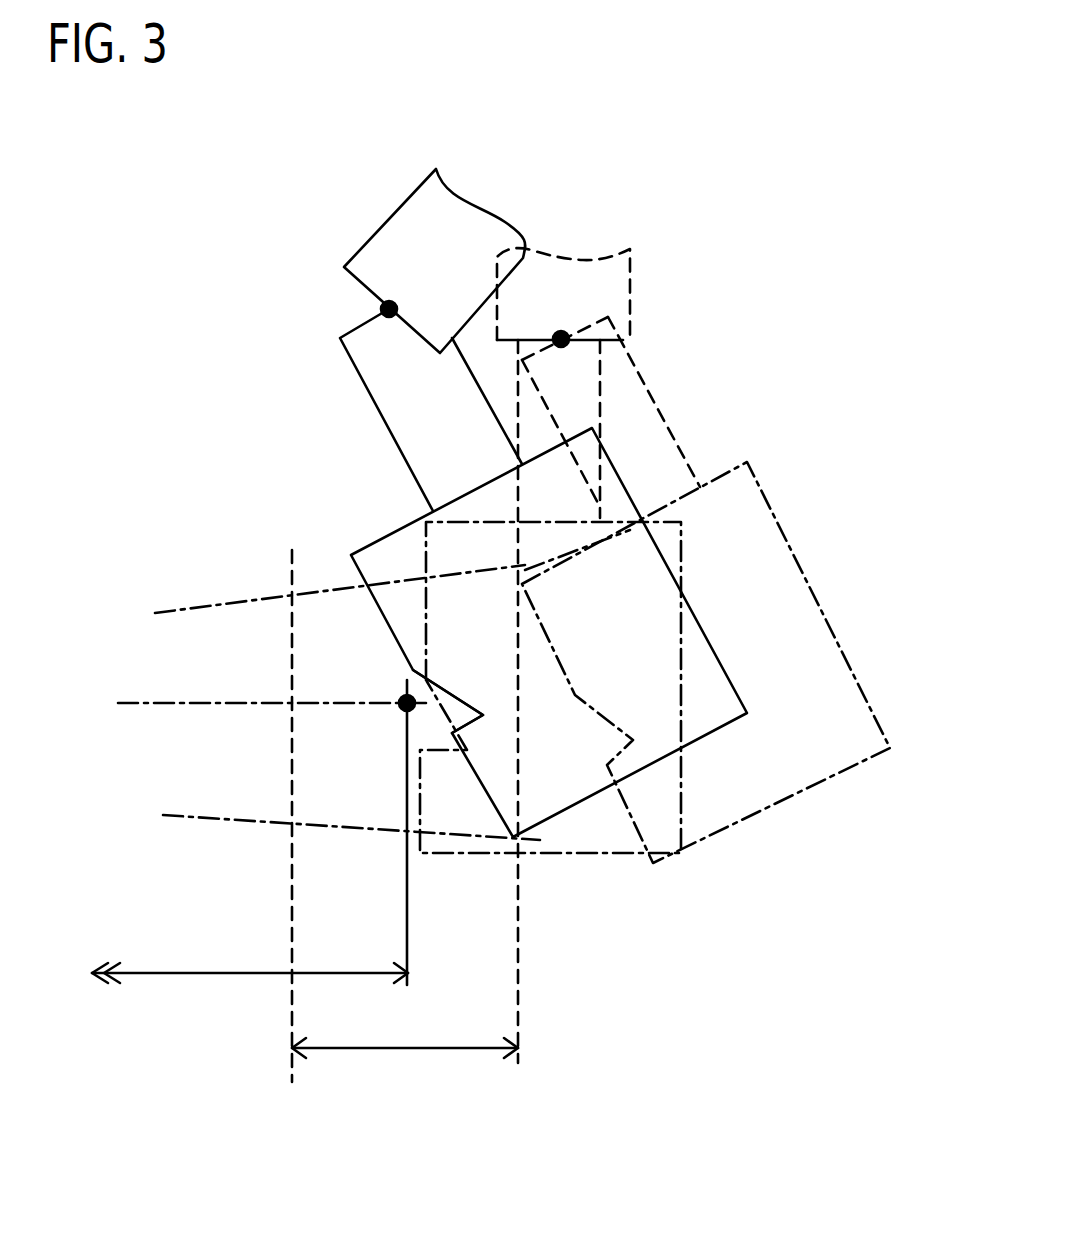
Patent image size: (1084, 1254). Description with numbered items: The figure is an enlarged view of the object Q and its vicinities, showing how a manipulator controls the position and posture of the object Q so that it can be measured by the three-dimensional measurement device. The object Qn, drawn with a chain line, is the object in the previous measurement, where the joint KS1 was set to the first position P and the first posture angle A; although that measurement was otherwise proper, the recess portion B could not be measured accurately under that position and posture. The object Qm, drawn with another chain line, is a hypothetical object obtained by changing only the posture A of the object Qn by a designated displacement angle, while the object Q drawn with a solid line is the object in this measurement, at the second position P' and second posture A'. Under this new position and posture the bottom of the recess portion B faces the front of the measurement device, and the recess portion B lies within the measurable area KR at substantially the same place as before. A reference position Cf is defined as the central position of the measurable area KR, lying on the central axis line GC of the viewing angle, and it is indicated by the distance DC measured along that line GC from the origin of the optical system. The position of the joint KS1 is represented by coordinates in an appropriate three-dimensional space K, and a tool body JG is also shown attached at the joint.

The joint KS1 is at (381, 307).
The grinding wheel (tool) JG is at (385, 393).
The object Q is at (627, 483).
The object in the previous measurement Qn is at (682, 547).
The hypothetical object Qm is at (840, 642).
The three-dimensional space K is at (162, 517).
The central axis line GC is at (162, 703).
The reference position Cf is at (400, 710).
The recess portion B is at (460, 700).
The distance DC is at (250, 952).
The measurable area KR is at (405, 816).